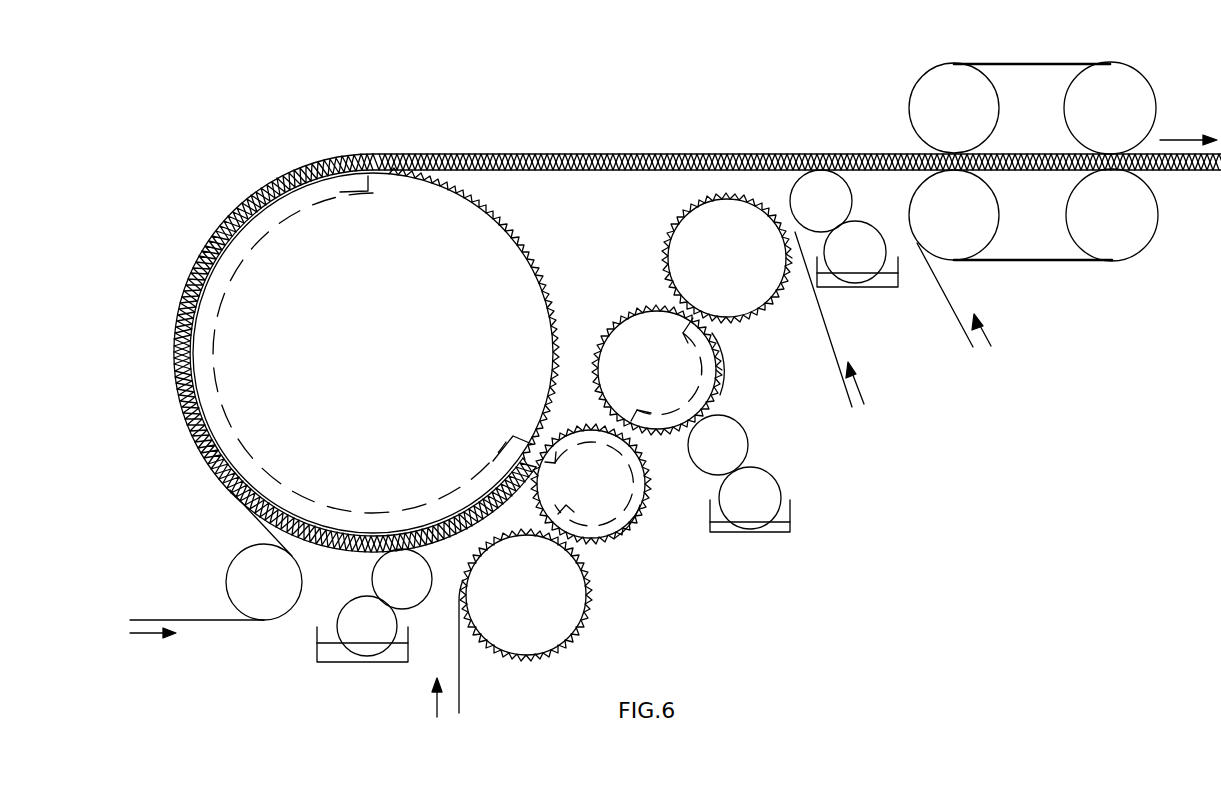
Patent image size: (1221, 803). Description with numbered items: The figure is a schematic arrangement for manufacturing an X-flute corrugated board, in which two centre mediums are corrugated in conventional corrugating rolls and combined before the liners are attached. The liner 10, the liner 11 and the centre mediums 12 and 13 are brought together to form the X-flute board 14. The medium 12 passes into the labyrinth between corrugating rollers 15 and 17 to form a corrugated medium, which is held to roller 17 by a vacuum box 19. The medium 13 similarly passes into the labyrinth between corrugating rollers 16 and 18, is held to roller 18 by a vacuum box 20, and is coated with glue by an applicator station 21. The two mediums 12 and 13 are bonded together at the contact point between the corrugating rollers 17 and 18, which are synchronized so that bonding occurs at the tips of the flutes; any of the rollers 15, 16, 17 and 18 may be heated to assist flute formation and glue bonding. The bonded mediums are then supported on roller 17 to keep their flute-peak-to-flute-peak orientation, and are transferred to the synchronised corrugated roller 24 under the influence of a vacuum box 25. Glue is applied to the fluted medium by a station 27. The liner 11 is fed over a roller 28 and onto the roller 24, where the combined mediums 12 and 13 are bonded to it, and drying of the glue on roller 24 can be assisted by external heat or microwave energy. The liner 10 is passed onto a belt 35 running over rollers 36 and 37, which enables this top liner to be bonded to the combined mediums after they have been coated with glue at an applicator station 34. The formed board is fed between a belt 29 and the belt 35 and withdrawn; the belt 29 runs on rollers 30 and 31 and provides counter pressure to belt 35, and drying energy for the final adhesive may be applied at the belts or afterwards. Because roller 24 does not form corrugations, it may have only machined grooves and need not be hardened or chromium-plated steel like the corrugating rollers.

The liner 10 is at (955, 318).
The liner 11 is at (155, 618).
The centre medium 12 is at (462, 680).
The centre medium 13 is at (827, 347).
The X-flute board 14 is at (1193, 171).
The corrugating roller 15 is at (582, 618).
The corrugating roller 16 is at (755, 253).
The corrugating roller 17 is at (604, 475).
The corrugating roller 18 is at (671, 357).
The vacuum box 19 is at (628, 522).
The vacuum box 20 is at (716, 378).
The applicator station 21 is at (742, 469).
The corrugated roller 24 is at (466, 357).
The vacuum box 25 is at (318, 513).
The glue station 27 is at (380, 598).
The roller 28 is at (293, 583).
The belt 29 is at (1043, 63).
The roller 30 is at (982, 111).
The roller 31 is at (1143, 107).
The applicator station 34 is at (846, 225).
The belt 35 is at (1050, 262).
The roller 36 is at (990, 209).
The roller 37 is at (1144, 207).